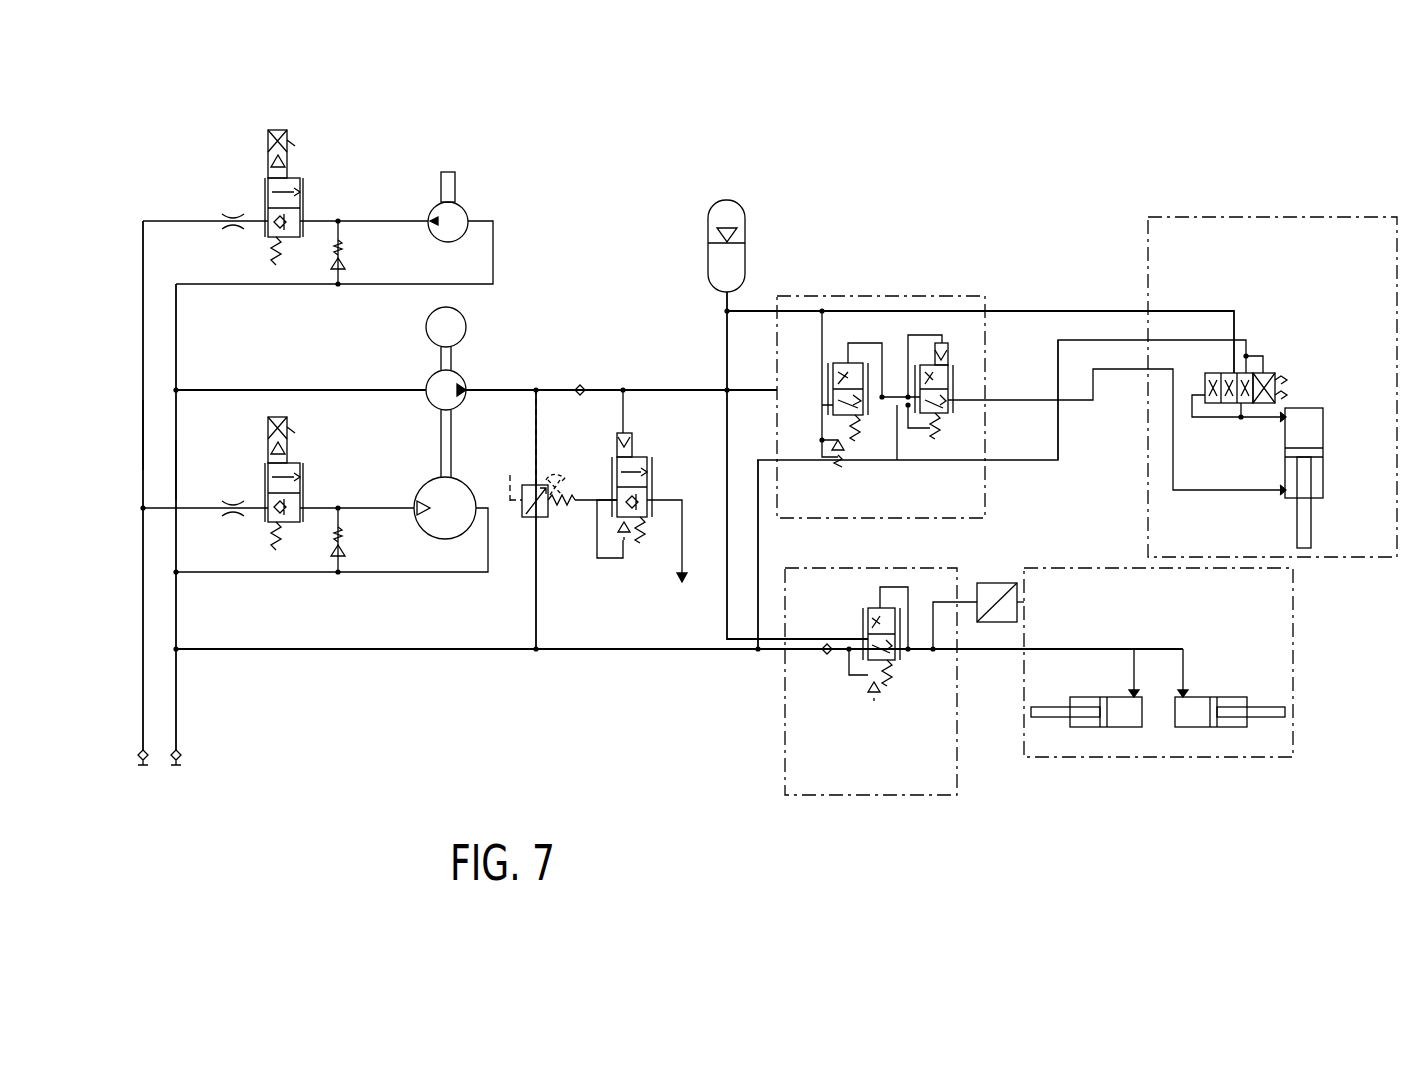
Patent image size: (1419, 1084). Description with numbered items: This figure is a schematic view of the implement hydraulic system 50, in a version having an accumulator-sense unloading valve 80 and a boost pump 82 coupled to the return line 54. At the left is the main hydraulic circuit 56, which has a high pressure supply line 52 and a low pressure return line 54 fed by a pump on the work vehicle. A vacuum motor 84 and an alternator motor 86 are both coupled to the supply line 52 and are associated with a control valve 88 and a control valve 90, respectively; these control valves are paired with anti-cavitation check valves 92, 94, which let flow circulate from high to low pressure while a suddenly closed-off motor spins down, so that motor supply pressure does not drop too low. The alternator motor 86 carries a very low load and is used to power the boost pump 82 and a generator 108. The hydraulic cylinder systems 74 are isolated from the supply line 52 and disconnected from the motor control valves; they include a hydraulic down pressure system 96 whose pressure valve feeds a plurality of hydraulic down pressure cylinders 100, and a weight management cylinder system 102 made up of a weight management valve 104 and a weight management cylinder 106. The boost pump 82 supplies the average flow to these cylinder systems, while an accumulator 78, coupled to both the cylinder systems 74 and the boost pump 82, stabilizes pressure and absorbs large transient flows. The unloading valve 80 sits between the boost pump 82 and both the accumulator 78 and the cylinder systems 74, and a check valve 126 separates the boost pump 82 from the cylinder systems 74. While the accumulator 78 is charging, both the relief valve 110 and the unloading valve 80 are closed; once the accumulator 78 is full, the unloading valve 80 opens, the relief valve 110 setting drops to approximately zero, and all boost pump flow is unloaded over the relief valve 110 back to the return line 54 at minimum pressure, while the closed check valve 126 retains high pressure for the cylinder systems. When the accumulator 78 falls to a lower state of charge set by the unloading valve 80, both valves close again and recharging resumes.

The implement hydraulic system 50 is at (558, 158).
The hydraulic cylinder systems 74 is at (1062, 161).
The main hydraulic circuit 56 is at (133, 416).
The supply line 52 is at (143, 447).
The return line 54 is at (176, 478).
The control valve 88 is at (303, 228).
The anti-cavitation check valve 92 is at (341, 247).
The vacuum motor 84 is at (463, 208).
The generator 108 is at (463, 318).
The boost pump 82 is at (462, 403).
The alternator motor 86 is at (470, 480).
The control valve 90 is at (303, 490).
The anti-cavitation check valve 94 is at (341, 535).
The check valve 126 is at (580, 395).
The accumulator-sense unloading valve 80 is at (655, 487).
The relief valve 110 is at (530, 520).
The accumulator 78 is at (745, 215).
The hydraulic down pressure system 96 is at (1098, 219).
The hydraulic down pressure cylinders 100 is at (1277, 217).
The weight management valve 104 is at (870, 795).
The weight management cylinder 106 is at (1157, 757).
The weight management cylinder system 102 is at (1133, 828).